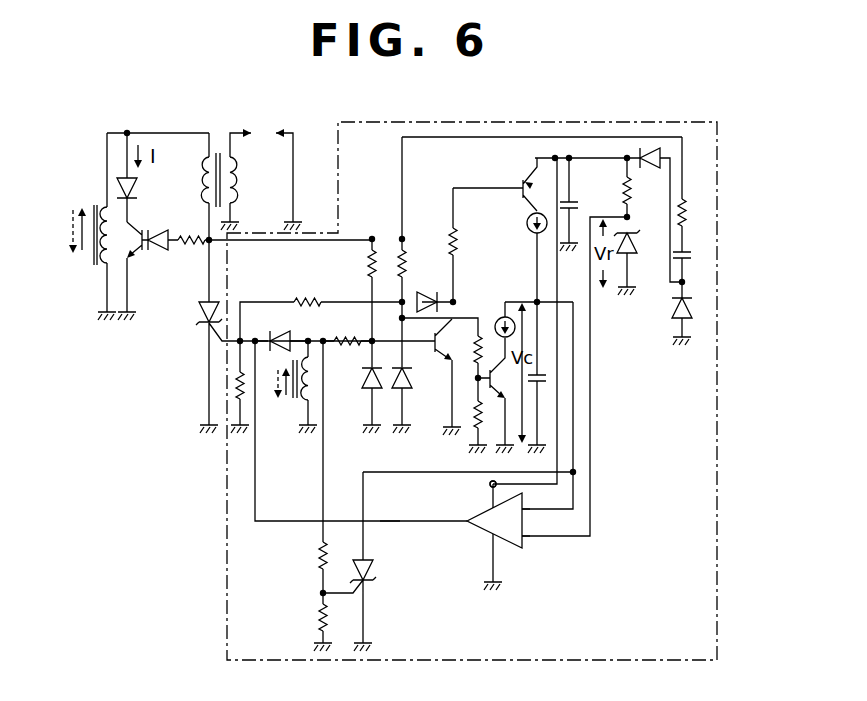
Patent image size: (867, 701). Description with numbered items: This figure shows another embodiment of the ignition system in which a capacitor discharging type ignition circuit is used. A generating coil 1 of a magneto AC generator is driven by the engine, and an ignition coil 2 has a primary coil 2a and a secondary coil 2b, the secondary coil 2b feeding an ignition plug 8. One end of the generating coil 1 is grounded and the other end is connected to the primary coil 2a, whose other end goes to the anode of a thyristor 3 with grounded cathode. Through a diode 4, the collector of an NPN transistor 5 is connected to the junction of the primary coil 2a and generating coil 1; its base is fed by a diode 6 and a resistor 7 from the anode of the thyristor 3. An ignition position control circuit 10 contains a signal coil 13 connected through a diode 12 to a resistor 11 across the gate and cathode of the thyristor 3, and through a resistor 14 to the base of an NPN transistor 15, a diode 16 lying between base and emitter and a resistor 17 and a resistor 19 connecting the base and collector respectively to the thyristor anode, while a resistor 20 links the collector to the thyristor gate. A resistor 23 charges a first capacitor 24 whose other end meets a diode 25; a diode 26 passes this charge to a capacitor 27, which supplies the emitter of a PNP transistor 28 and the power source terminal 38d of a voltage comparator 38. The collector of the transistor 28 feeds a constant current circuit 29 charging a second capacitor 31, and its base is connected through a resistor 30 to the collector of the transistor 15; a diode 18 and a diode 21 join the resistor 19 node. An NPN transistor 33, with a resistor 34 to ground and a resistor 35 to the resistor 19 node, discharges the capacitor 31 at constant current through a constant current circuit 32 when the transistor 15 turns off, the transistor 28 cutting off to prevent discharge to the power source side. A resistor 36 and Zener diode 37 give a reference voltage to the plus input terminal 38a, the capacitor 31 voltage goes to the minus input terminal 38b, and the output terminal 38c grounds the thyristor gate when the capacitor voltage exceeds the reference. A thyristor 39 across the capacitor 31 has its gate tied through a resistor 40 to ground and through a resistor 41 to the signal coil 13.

The generating coil 1 is at (103, 207).
The ignition coil 2 is at (230, 153).
The primary coil 2a is at (208, 166).
The secondary coil 2b is at (237, 166).
The thyristor 3 is at (200, 318).
The diode 4 is at (140, 190).
The NPN transistor 5 is at (140, 234).
The diode 6 is at (158, 250).
The resistor 7 is at (190, 248).
The ignition plug 8 is at (266, 136).
The ignition position control circuit 10 is at (507, 118).
The resistor 11 is at (236, 386).
The diode 12 is at (278, 334).
The signal coil 13 is at (302, 402).
The resistor 14 is at (347, 348).
The NPN transistor 15 is at (443, 356).
The diode 16 is at (364, 386).
The resistor 17 is at (368, 264).
The diode 18 is at (425, 296).
The resistor 19 is at (406, 262).
The resistor 20 is at (307, 300).
The diode 21 is at (408, 386).
The resistor 23 is at (687, 212).
The first capacitor 24 is at (695, 258).
The diode 25 is at (675, 308).
The diode 26 is at (650, 150).
The capacitor 27 is at (572, 205).
The PNP transistor 28 is at (520, 180).
The constant current circuit 29 is at (526, 226).
The resistor 30 is at (458, 242).
The second capacitor 31 is at (545, 378).
The constant current circuit 32 is at (498, 318).
The NPN transistor 33 is at (496, 398).
The resistor 34 is at (475, 414).
The resistor 35 is at (478, 348).
The resistor 36 is at (631, 195).
The Zener diode 37 is at (633, 248).
The voltage comparator 38 is at (503, 528).
The plus input terminal 38a is at (526, 538).
The minus input terminal 38b is at (575, 512).
The output terminal 38c is at (385, 523).
The power source terminal 38d is at (489, 486).
The thyristor 39 is at (368, 573).
The resistor 40 is at (320, 617).
The resistor 41 is at (320, 556).